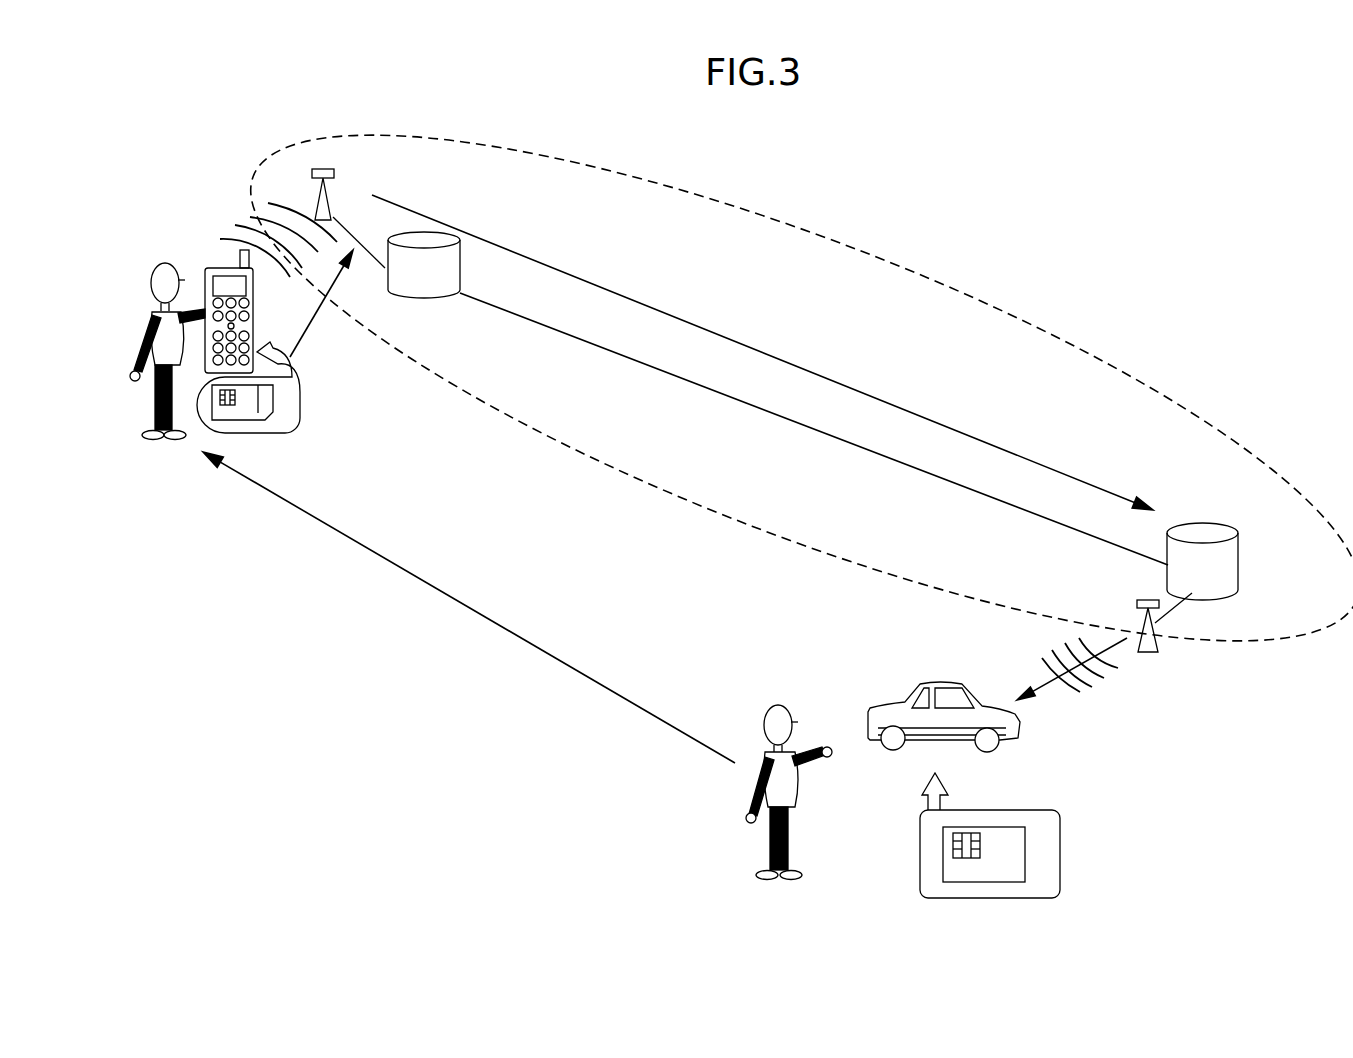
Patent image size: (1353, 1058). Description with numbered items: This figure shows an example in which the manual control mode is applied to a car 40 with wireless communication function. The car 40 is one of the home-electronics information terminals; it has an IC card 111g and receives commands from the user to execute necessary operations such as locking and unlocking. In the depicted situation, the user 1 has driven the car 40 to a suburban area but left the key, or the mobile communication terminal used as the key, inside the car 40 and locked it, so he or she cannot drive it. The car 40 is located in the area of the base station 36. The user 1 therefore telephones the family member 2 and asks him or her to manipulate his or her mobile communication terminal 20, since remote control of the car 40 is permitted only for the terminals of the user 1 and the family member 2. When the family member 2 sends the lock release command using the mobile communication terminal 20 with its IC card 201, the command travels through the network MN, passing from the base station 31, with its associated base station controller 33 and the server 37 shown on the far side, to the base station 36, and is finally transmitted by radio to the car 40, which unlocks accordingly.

The user 1 is at (797, 790).
The family member 2 is at (150, 292).
The mobile communication terminal 20 is at (258, 312).
The IC card 201 is at (263, 436).
The base station 31 is at (333, 197).
The base station controller 33 is at (424, 265).
The base station 36 is at (1160, 650).
The server 37 is at (1202, 561).
The car with wireless communication function 40 is at (907, 690).
The IC card 111g is at (1060, 852).
The mobile network MN is at (1010, 315).